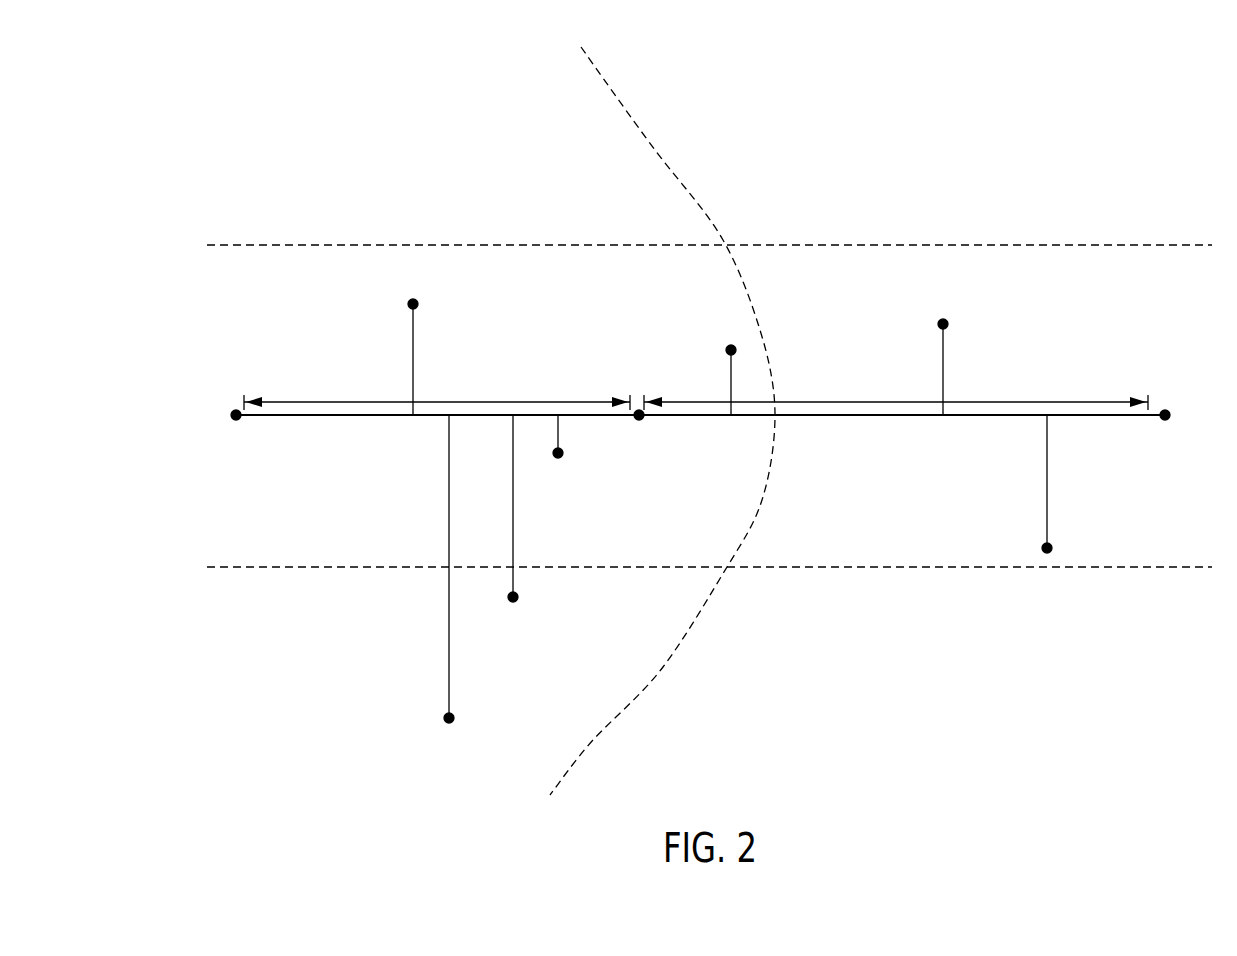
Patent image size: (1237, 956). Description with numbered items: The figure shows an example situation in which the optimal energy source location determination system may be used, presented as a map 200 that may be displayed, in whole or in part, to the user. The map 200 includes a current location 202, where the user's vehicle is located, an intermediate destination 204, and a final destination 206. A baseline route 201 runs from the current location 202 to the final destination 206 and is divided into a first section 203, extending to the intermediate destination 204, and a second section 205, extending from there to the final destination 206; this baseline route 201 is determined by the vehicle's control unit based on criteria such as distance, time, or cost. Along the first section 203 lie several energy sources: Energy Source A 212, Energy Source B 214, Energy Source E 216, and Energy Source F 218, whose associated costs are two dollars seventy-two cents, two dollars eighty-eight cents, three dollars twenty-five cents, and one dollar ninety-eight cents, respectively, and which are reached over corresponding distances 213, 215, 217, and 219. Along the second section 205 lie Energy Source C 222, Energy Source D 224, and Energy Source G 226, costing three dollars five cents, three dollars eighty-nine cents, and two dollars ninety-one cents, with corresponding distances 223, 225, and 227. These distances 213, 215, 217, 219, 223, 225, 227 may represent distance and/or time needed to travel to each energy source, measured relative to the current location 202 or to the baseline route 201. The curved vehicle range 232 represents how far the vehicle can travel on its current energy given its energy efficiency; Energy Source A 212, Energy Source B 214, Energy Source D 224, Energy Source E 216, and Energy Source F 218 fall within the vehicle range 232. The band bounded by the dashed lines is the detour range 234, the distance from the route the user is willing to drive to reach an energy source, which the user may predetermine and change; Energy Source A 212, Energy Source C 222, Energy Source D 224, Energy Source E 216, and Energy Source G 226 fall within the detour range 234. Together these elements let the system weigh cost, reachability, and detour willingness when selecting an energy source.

The map 200 is at (990, 112).
The baseline route 201 is at (372, 418).
The current location 202 is at (236, 410).
The first section 203 is at (337, 400).
The intermediate destination 204 is at (641, 410).
The second section 205 is at (899, 400).
The final destination 206 is at (1167, 410).
The Energy Source A 212 is at (416, 304).
The distance 213 is at (414, 337).
The Energy Source B 214 is at (516, 597).
The distance 215 is at (514, 532).
The Energy Source E 216 is at (561, 456).
The distance 217 is at (560, 420).
The Energy Source F 218 is at (452, 718).
The distance 219 is at (451, 663).
The Energy Source C 222 is at (1050, 548).
The distance 223 is at (1049, 490).
The Energy Source D 224 is at (734, 350).
The distance 225 is at (733, 387).
The Energy Source G 226 is at (946, 324).
The distance 227 is at (945, 375).
The vehicle range 232 is at (665, 667).
The detour range 234 is at (832, 245).